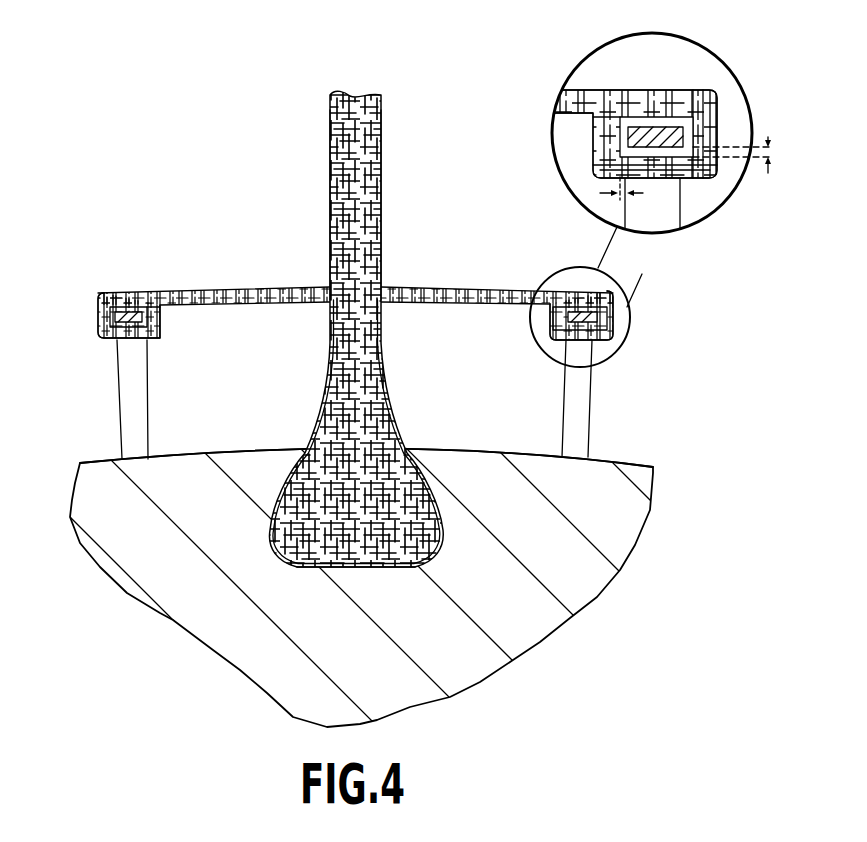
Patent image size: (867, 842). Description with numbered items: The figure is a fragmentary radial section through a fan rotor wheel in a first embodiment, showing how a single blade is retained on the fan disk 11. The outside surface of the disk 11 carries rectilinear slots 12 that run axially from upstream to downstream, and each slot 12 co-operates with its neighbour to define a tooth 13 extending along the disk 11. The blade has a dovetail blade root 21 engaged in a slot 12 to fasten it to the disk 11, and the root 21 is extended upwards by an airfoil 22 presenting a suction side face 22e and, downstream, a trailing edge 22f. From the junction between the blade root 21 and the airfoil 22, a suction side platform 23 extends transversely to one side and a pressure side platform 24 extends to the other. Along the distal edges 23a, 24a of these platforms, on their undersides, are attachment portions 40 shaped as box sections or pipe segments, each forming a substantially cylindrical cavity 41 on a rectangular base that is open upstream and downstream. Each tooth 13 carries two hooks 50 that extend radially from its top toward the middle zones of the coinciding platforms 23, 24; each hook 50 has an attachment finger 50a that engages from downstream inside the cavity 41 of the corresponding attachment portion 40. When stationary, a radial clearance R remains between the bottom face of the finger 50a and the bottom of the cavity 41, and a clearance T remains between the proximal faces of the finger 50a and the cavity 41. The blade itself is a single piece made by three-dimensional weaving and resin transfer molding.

The fan disk 11 is at (362, 663).
The slot 12 is at (300, 565).
The tooth 13 is at (238, 452).
The blade root 21 is at (368, 454).
The airfoil 22 is at (382, 121).
The suction side face 22e is at (382, 168).
The trailing edge 22f is at (330, 168).
The suction side platform 23 is at (478, 290).
The distal edge of suction side platform 23a is at (718, 107).
The pressure side platform 24 is at (261, 292).
The distal edge of pressure side platform 24a is at (98, 294).
The attachment portion 40 is at (97, 350).
The cavity 41 is at (160, 315).
The hook 50 is at (110, 418).
The attachment finger 50a is at (102, 319).
The radial clearance T is at (617, 196).
The radial clearance R is at (744, 155).